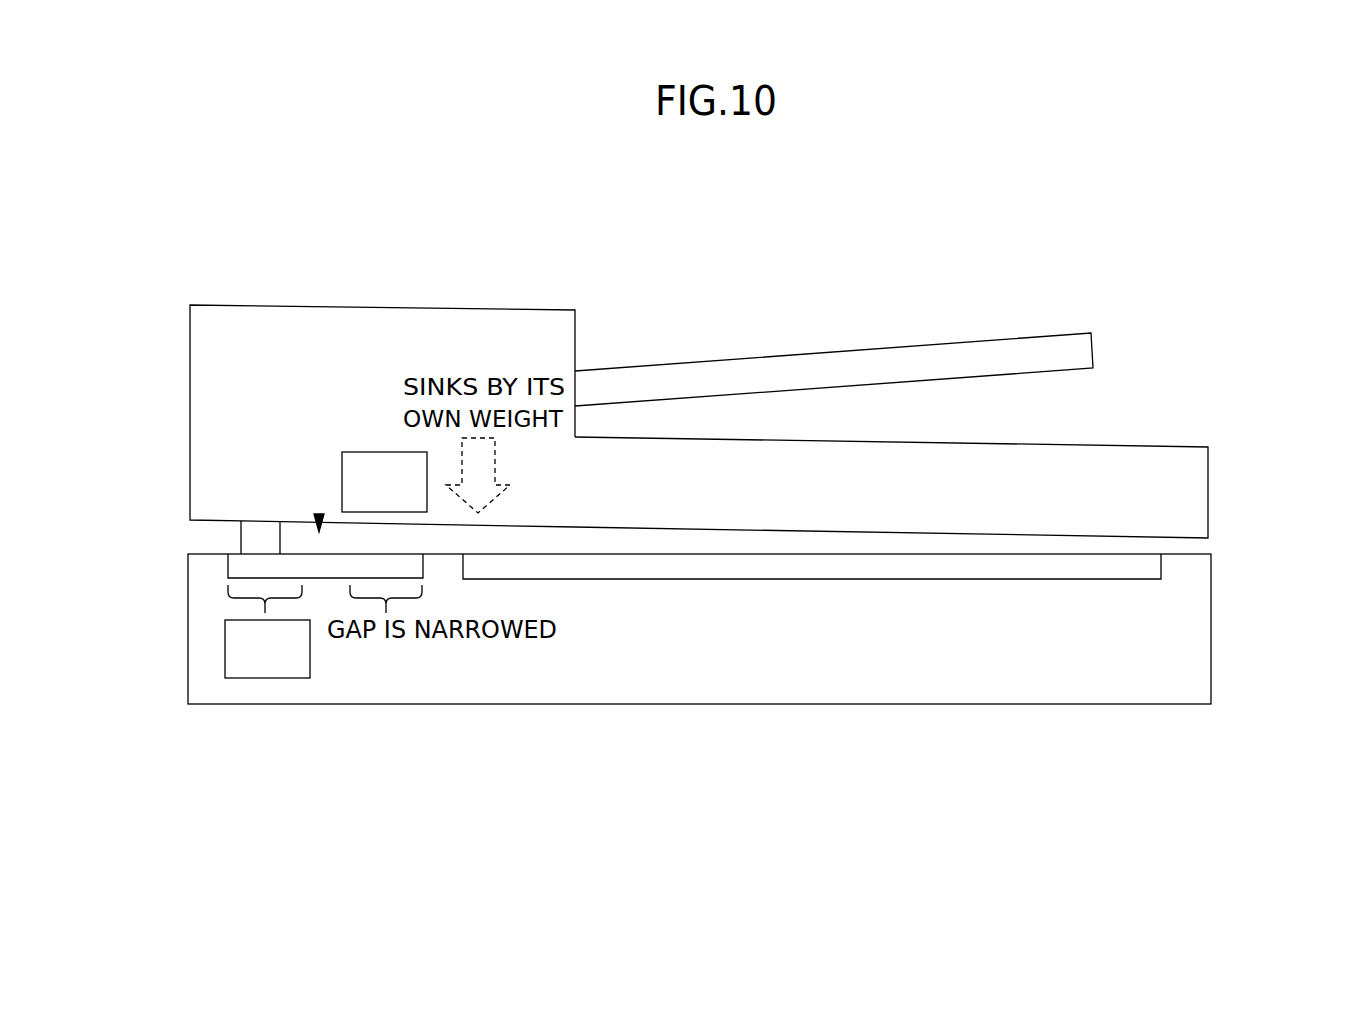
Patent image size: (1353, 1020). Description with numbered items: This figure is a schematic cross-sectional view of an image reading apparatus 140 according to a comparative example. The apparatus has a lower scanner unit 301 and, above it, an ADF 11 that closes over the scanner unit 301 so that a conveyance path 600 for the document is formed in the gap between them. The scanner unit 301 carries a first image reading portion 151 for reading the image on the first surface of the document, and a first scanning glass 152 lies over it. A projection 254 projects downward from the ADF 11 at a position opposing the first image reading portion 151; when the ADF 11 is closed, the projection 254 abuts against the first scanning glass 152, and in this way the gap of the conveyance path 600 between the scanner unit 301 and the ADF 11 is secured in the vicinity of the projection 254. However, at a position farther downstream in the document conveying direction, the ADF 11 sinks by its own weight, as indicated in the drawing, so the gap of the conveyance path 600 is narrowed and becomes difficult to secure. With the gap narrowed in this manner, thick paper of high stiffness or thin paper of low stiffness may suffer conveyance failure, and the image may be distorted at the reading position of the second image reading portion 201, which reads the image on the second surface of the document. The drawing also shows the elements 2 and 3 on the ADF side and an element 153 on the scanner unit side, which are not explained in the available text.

The first plate 2 is at (1052, 373).
The second plate 3 is at (1052, 444).
The ADF 11 is at (1190, 394).
The image reading apparatus 140 is at (901, 281).
The first image reading portion 151 is at (268, 678).
The first scanning glass 152 is at (237, 567).
The second electrode 153 is at (1147, 568).
The second image reading portion 201 is at (377, 455).
The projection 254 is at (248, 540).
The scanner unit 301 is at (1228, 563).
The conveyance path 600 is at (319, 527).